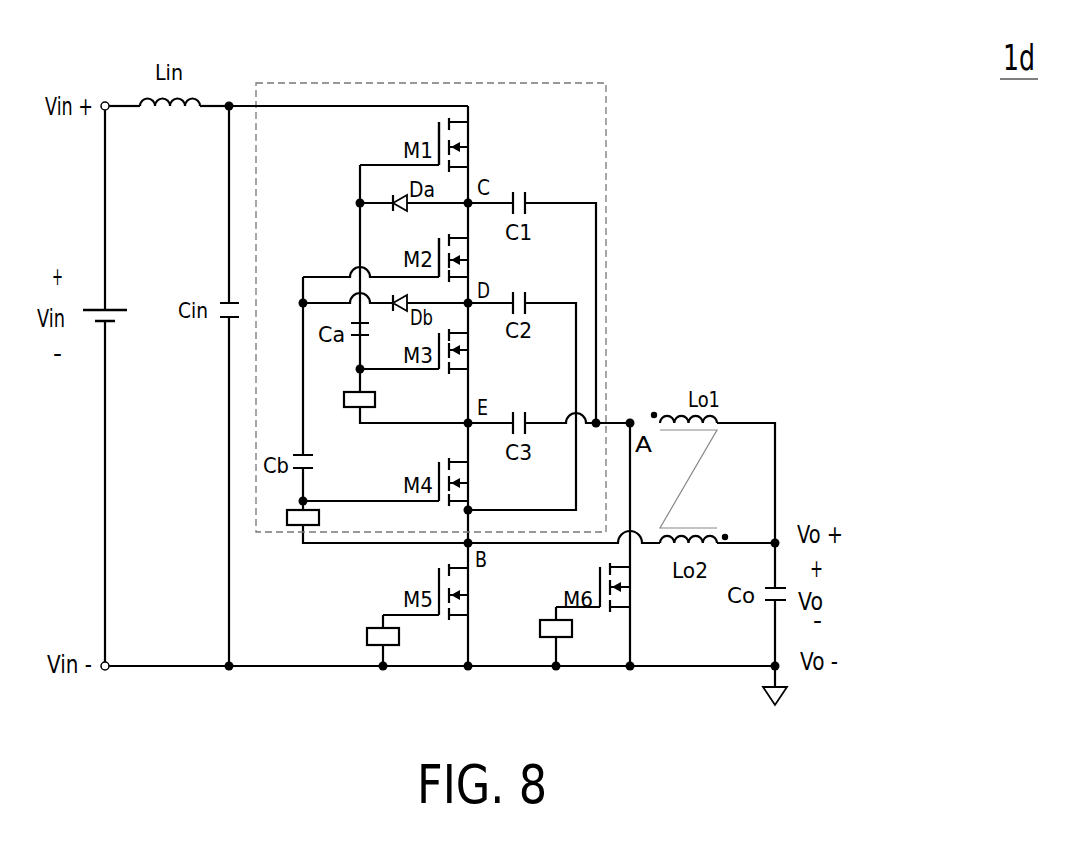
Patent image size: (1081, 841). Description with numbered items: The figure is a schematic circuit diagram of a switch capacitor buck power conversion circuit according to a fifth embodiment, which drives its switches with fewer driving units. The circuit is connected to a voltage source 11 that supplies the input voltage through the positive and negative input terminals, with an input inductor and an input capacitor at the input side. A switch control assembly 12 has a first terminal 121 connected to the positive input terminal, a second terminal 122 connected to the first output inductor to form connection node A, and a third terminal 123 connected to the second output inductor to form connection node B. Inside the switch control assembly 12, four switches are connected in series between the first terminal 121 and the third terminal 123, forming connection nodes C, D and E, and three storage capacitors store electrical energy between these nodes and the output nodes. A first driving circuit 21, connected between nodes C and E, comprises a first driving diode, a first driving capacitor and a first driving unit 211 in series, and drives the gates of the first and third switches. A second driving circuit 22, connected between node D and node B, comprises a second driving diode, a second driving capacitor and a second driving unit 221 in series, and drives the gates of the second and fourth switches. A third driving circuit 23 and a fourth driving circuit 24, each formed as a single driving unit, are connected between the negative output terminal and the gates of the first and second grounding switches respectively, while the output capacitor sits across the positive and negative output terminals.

The voltage source 11 is at (107, 308).
The switch control assembly 12 is at (500, 83).
The first terminal 121 is at (254, 105).
The second terminal 122 is at (611, 421).
The third terminal 123 is at (466, 545).
The first driving circuit 21 is at (354, 146).
The second driving circuit 22 is at (334, 258).
The first driving unit 211 is at (357, 408).
The second driving unit 221 is at (297, 527).
The third driving circuit 23 is at (381, 628).
The fourth driving circuit 24 is at (553, 621).